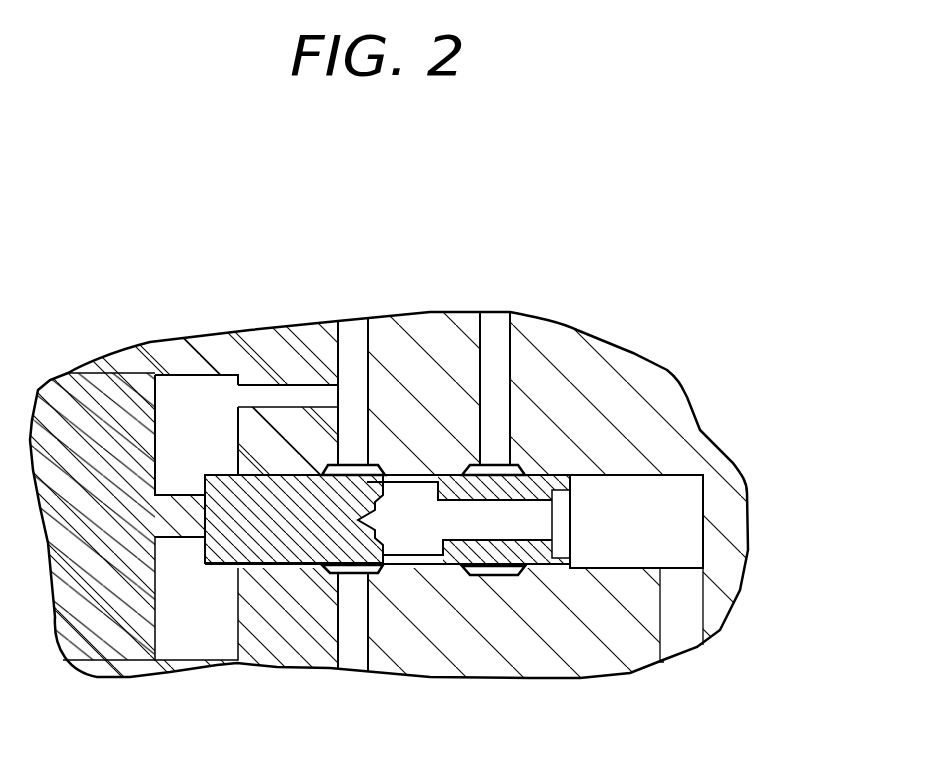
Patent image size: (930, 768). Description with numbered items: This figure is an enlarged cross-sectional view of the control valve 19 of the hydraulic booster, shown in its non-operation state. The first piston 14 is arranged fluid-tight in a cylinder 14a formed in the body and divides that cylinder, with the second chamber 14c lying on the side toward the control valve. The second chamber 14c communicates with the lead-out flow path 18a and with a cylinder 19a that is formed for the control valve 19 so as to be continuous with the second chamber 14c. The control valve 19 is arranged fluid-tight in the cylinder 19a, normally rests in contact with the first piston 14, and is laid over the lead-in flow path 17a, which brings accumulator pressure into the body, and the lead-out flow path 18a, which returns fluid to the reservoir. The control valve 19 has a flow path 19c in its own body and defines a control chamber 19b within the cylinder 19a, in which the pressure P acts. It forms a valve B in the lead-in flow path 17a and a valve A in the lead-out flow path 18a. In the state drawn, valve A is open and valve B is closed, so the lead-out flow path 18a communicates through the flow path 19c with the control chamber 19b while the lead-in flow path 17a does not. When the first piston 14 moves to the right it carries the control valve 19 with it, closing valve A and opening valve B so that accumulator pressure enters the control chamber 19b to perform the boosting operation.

The first piston 14 is at (93, 630).
The cylinder 14a is at (163, 378).
The second chamber 14c is at (212, 388).
The lead-out flow path 18a is at (352, 338).
The lead-in flow path 17a is at (492, 338).
The control valve 19 is at (282, 550).
The cylinder 19a is at (618, 478).
The control chamber 19b is at (665, 508).
The flow path 19c is at (487, 528).
The valve A is at (374, 463).
The valve B is at (462, 462).